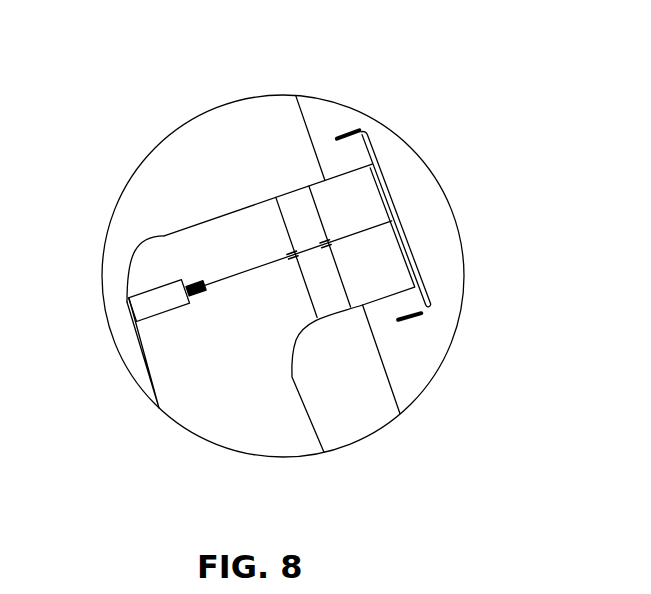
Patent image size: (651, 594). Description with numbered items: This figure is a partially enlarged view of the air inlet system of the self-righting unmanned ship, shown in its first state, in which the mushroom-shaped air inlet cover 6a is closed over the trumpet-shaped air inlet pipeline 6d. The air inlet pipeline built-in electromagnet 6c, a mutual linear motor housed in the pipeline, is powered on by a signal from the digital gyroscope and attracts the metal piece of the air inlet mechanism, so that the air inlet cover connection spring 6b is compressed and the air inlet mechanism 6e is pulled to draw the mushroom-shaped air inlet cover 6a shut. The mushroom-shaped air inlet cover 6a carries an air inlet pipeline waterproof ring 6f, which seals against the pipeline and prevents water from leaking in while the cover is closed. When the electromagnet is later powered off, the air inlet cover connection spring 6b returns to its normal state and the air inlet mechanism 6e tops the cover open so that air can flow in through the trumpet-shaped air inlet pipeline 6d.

The mushroom-shaped air inlet cover 6a is at (430, 297).
The air inlet cover connection spring 6b is at (193, 283).
The air inlet pipeline built-in electromagnet 6c is at (128, 298).
The trumpet-shaped air inlet pipeline 6d is at (295, 347).
The air inlet mechanism 6e is at (266, 263).
The air inlet pipeline waterproof ring 6f is at (412, 282).